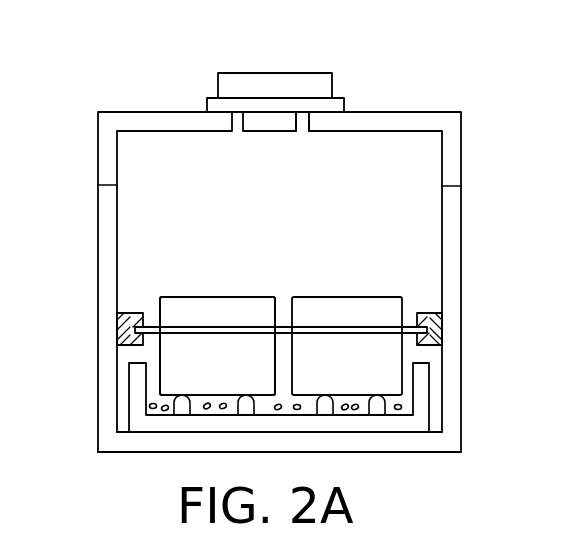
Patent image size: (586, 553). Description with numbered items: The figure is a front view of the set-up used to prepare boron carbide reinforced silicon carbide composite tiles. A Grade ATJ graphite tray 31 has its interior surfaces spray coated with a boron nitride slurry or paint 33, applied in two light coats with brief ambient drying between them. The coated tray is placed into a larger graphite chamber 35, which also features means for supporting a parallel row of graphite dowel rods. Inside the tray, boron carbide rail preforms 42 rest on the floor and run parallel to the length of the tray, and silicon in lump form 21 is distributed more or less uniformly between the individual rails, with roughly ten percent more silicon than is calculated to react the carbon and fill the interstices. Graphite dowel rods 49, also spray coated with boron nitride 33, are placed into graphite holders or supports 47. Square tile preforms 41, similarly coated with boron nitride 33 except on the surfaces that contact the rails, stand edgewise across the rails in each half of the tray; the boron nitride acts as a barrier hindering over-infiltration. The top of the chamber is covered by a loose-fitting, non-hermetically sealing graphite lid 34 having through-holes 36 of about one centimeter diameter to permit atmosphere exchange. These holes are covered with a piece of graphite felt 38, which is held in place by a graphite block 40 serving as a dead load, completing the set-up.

The silicon in lump form 21 is at (402, 407).
The graphite tray 31 is at (139, 389).
The boron nitride paint 33 is at (246, 293).
The graphite lid 34 is at (107, 124).
The graphite chamber 35 is at (108, 432).
The through-holes 36 is at (302, 127).
The graphite felt 38 is at (207, 108).
The graphite block 40 is at (253, 80).
The tile preforms 41 is at (210, 308).
The boron carbide rail preforms 42 is at (325, 395).
The graphite holders 47 is at (437, 330).
The graphite dowel rods 49 is at (178, 320).